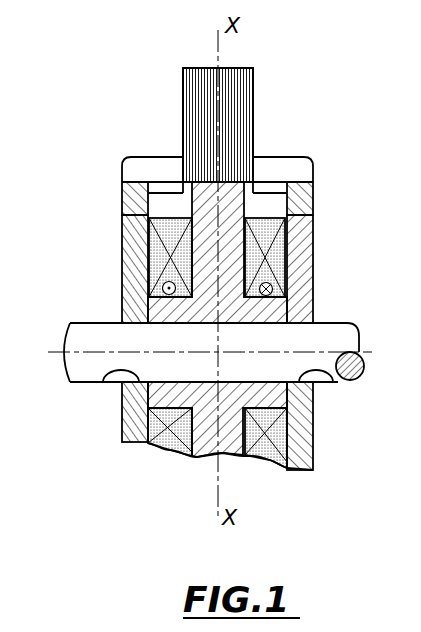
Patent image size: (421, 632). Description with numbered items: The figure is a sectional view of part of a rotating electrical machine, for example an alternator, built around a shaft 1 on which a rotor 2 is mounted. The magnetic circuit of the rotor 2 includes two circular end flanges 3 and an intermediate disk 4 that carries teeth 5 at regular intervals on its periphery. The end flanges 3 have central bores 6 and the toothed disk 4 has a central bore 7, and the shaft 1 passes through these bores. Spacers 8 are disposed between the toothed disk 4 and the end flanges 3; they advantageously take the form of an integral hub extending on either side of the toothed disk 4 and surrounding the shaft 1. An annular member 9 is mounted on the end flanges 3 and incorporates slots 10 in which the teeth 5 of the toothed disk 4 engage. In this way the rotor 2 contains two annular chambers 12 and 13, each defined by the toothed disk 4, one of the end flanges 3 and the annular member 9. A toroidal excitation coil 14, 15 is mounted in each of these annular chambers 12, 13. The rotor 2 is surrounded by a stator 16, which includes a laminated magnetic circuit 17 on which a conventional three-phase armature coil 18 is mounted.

The shaft 1 is at (100, 340).
The rotor 2 is at (322, 226).
The circular end flanges 3 is at (130, 267).
The intermediate disk 4 is at (313, 207).
The teeth 5 is at (257, 192).
The central bore 6 is at (120, 372).
The central bore 7 is at (213, 410).
The spacers 8 is at (122, 413).
The annular member 9 is at (312, 190).
The slots 10 is at (165, 202).
The annular chamber 12 is at (158, 440).
The annular chamber 13 is at (278, 447).
The toroidal excitation coil 14 is at (145, 225).
The toroidal excitation coil 15 is at (275, 250).
The stator 16 is at (258, 82).
The laminated magnetic circuit 17 is at (198, 73).
The three-phase armature coil 18 is at (157, 163).